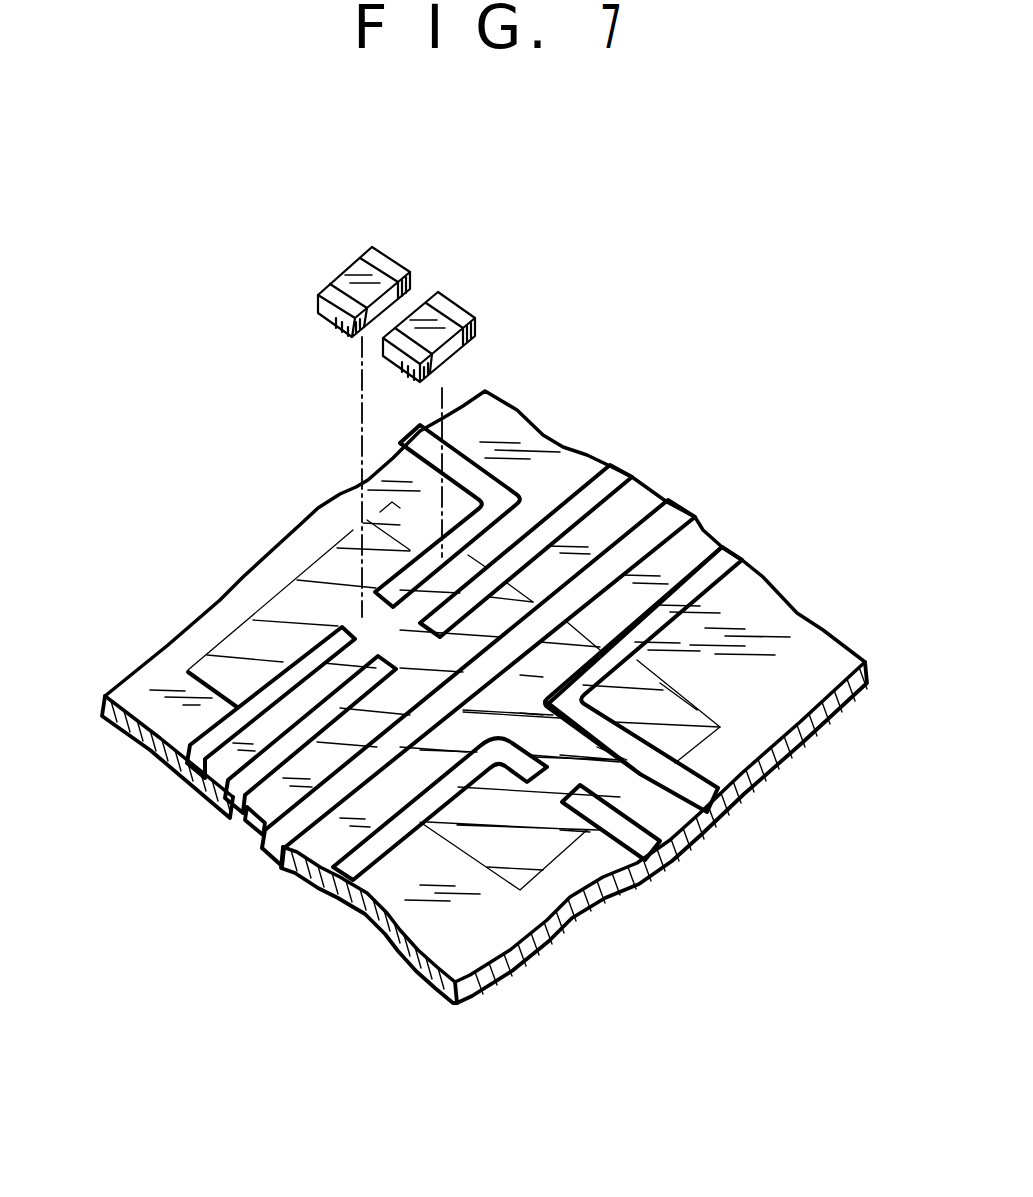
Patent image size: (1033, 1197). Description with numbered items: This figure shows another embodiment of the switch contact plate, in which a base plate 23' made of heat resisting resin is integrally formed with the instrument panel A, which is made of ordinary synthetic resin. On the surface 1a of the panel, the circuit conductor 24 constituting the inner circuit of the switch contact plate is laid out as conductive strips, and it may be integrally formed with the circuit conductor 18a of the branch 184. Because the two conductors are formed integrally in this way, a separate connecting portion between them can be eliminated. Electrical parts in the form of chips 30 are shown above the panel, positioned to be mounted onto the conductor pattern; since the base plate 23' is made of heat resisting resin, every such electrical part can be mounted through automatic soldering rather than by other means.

The chip component 30 is at (405, 260).
The instrument panel A is at (688, 482).
The surface of insulating substrate 1a is at (785, 634).
The branch 184 is at (180, 738).
The circuit conductor 18a is at (225, 760).
The base plate 23' is at (681, 694).
The circuit conductor 24 is at (343, 707).